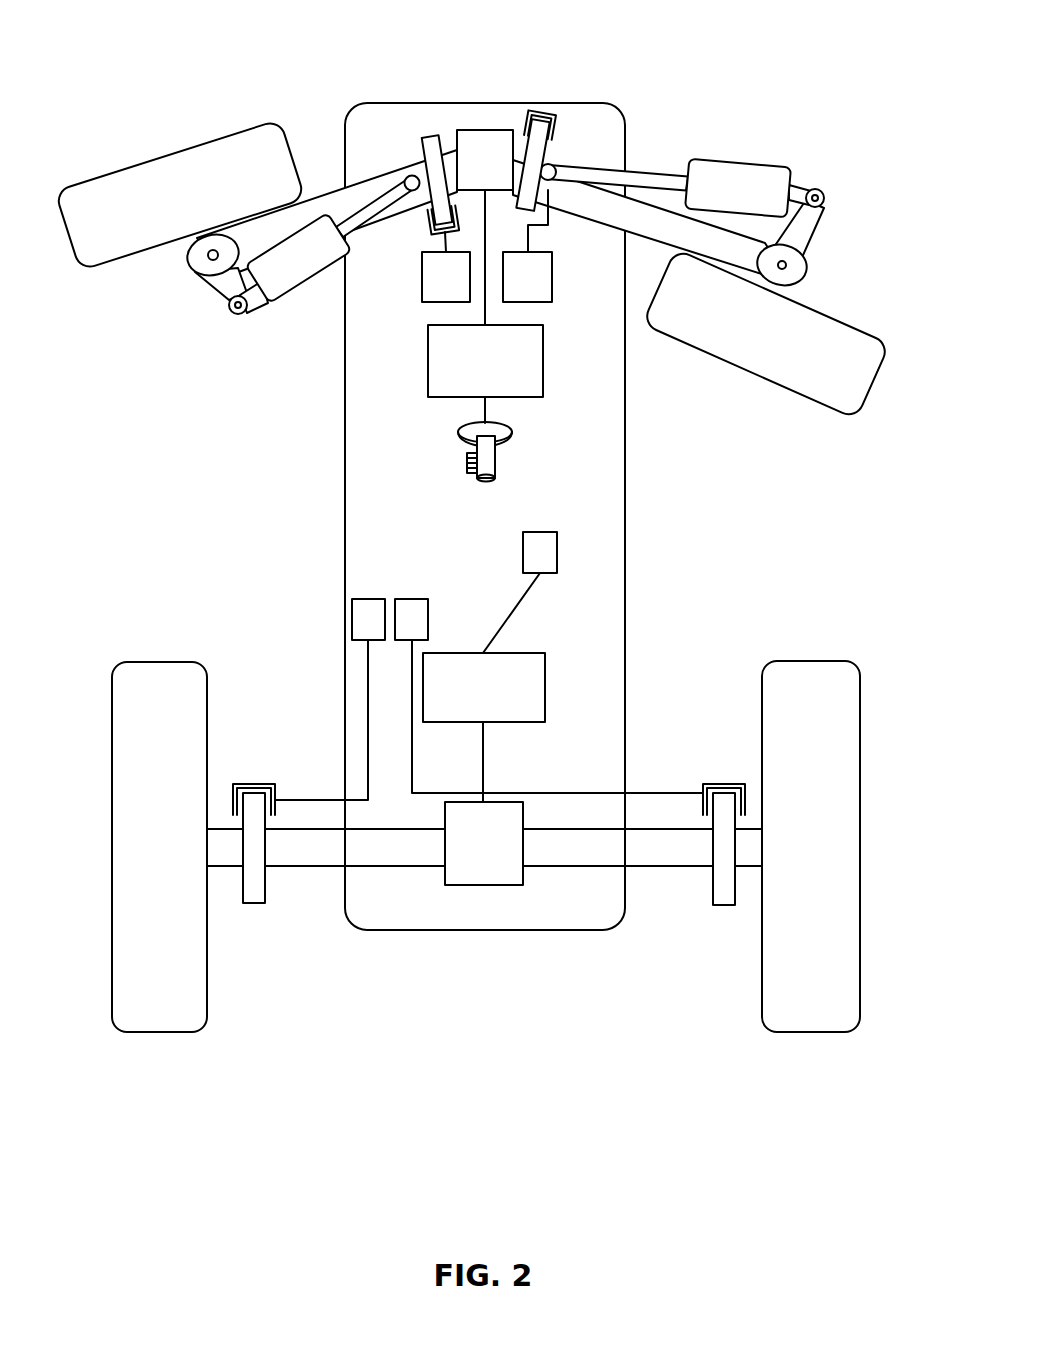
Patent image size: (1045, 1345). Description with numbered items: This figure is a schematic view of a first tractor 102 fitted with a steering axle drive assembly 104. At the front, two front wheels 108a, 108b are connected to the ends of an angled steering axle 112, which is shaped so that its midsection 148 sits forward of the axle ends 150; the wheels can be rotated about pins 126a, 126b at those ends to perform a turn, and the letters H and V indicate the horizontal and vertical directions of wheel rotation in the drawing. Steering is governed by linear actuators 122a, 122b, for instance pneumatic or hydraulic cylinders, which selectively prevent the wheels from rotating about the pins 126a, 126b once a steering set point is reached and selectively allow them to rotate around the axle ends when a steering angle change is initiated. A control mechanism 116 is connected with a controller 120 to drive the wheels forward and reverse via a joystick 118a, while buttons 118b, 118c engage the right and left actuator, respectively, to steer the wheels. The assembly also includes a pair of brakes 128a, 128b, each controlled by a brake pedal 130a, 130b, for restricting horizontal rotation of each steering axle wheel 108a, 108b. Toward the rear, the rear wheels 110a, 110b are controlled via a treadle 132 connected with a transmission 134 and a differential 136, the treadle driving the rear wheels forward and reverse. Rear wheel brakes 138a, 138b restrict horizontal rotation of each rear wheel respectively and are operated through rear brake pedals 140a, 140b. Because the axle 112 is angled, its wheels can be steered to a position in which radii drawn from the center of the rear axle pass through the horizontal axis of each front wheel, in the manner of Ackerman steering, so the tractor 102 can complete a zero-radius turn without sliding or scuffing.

The first tractor 102 is at (168, 462).
The steering axle drive assembly 104 is at (675, 52).
The front wheel 108a is at (128, 213).
The front wheel 108b is at (733, 353).
The rear wheel 110a is at (118, 873).
The rear wheel 110b is at (768, 873).
The angled steering axle 112 is at (367, 187).
The control mechanism 116 is at (634, 428).
The joystick 118a is at (510, 455).
The button 118b is at (477, 463).
The button 118c is at (468, 468).
The controller 120 is at (455, 374).
The linear actuator 122a is at (294, 268).
The linear actuator 122b is at (753, 190).
The pin 126a is at (207, 260).
The pin 126b is at (786, 265).
The brake 128a is at (437, 147).
The brake 128b is at (552, 118).
The brake pedal 130a is at (430, 283).
The brake pedal 130b is at (537, 282).
The treadle 132 is at (545, 558).
The transmission 134 is at (452, 704).
The differential 136 is at (452, 856).
The rear wheel brake 138a is at (255, 888).
The rear wheel brake 138b is at (727, 888).
The rear brake pedal 140a is at (368, 617).
The rear brake pedal 140b is at (412, 630).
The midsection 148 is at (535, 136).
The axle end 150 is at (727, 243).
The horizontal axis H is at (203, 130).
The vertical axis V is at (208, 255).